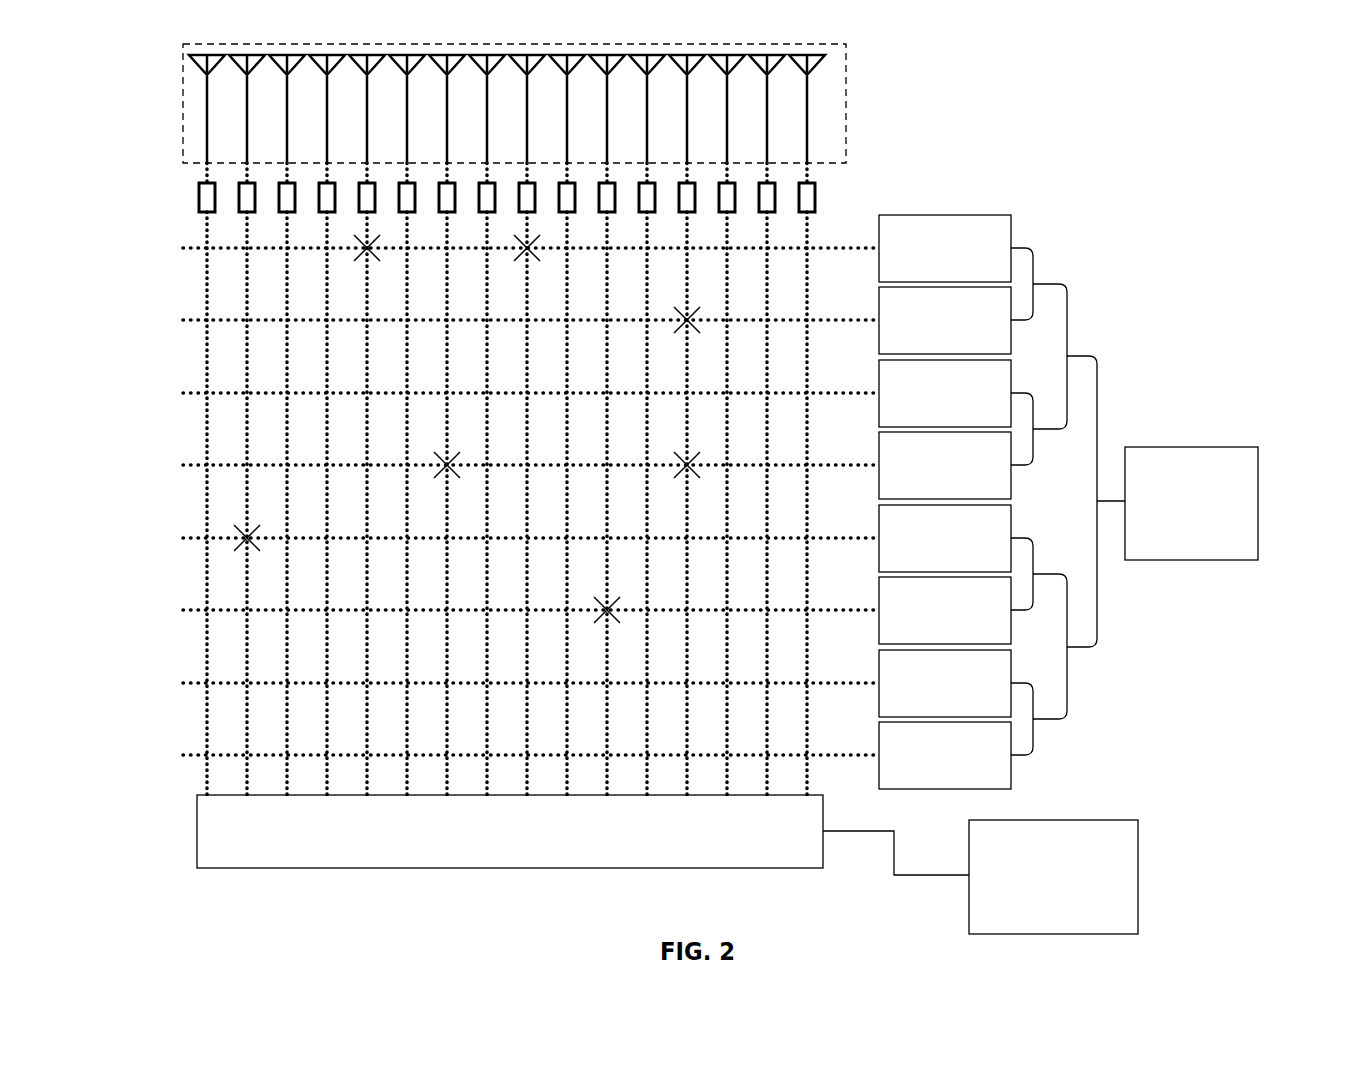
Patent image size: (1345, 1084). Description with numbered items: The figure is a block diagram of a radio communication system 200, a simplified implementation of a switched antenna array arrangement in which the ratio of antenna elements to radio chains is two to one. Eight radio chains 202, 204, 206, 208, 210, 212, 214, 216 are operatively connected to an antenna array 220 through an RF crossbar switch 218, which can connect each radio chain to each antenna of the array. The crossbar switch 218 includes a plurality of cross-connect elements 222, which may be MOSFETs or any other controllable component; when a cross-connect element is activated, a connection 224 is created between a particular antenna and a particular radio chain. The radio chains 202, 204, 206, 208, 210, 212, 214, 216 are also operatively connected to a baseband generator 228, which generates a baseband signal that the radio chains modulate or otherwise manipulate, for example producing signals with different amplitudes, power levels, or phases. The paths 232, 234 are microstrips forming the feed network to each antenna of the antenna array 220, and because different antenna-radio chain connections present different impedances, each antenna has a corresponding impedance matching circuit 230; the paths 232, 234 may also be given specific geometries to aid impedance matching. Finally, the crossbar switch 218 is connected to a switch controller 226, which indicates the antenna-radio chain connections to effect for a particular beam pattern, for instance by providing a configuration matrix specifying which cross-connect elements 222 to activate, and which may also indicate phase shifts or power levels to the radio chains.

The radio communication system 200 is at (1249, 110).
The radio chain 202 is at (929, 279).
The radio chain 204 is at (929, 351).
The radio chain 206 is at (929, 424).
The radio chain 208 is at (929, 496).
The radio chain 210 is at (929, 569).
The radio chain 212 is at (929, 641).
The radio chain 214 is at (929, 714).
The radio chain 216 is at (929, 786).
The RF crossbar switch 218 is at (625, 846).
The antenna array 220 is at (183, 102).
The cross-connect element 222 is at (192, 393).
The connection 224 is at (233, 542).
The switch controller 226 is at (1037, 919).
The baseband generator 228 is at (1176, 549).
The impedance matching circuit 230 is at (198, 189).
The path 232 is at (207, 293).
The path 234 is at (225, 753).